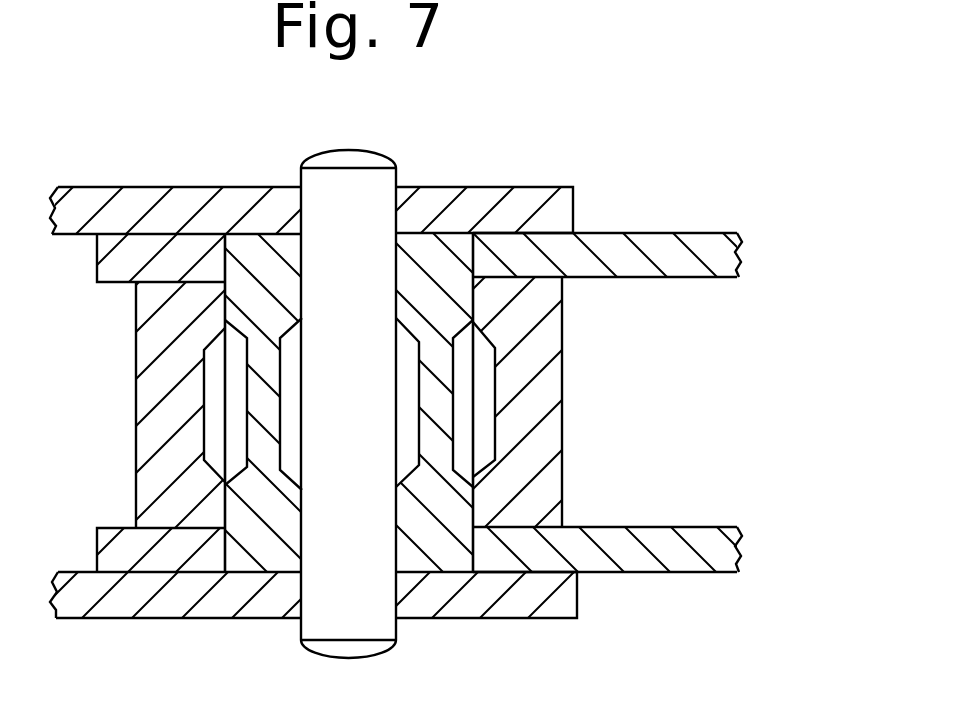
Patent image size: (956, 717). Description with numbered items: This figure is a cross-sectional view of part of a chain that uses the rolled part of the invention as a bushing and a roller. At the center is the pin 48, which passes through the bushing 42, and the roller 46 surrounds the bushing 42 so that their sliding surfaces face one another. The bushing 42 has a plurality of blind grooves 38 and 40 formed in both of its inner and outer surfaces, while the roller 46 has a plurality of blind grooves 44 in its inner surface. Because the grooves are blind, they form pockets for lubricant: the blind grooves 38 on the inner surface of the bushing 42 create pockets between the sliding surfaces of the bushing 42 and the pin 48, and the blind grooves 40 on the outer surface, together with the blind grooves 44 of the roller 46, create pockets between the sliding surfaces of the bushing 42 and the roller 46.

The blind grooves 38 is at (403, 490).
The blind grooves 40 is at (462, 485).
The bushing 42 is at (437, 253).
The blind grooves 44 is at (492, 440).
The roller 46 is at (538, 390).
The pin 48 is at (318, 222).